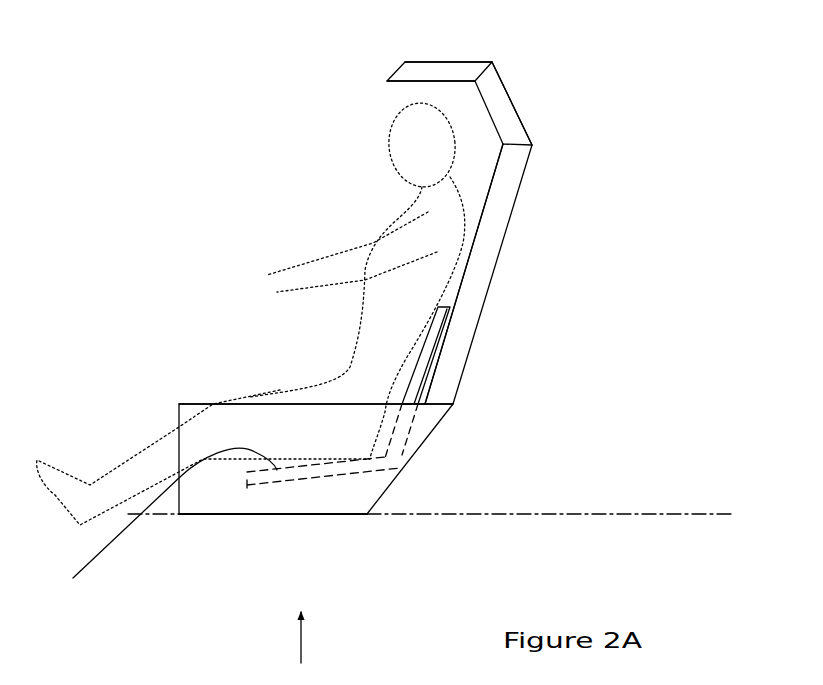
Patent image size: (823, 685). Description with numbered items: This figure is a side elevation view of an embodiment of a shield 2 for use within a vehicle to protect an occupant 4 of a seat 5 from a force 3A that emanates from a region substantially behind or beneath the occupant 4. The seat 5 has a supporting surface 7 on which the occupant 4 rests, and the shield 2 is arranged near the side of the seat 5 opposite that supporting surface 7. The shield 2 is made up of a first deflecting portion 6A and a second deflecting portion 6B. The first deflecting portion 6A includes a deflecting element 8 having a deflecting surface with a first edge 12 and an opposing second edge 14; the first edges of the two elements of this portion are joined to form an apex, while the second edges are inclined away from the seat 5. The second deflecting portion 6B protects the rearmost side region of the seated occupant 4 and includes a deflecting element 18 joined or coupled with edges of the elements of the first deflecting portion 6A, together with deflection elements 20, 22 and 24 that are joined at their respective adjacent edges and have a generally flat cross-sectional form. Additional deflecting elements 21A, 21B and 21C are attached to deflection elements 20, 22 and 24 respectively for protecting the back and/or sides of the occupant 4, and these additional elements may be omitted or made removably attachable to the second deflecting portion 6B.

The shield 2 is at (237, 220).
The occupant 4 is at (150, 442).
The seat 5 is at (390, 459).
The first deflecting portion 6A is at (238, 533).
The second deflecting portion 6B is at (530, 276).
The supporting surface 7 is at (167, 523).
The deflecting element 8 is at (338, 497).
The first edge 12 is at (288, 514).
The second edge 14 is at (283, 402).
The deflecting element 18 is at (421, 446).
The deflection element 20 is at (515, 205).
The additional deflecting element 21A is at (452, 360).
The additional deflecting element 21B is at (497, 95).
The additional deflecting element 21C is at (430, 72).
The deflection element 22 is at (520, 114).
The deflection element 24 is at (460, 62).
The force 3A is at (303, 637).